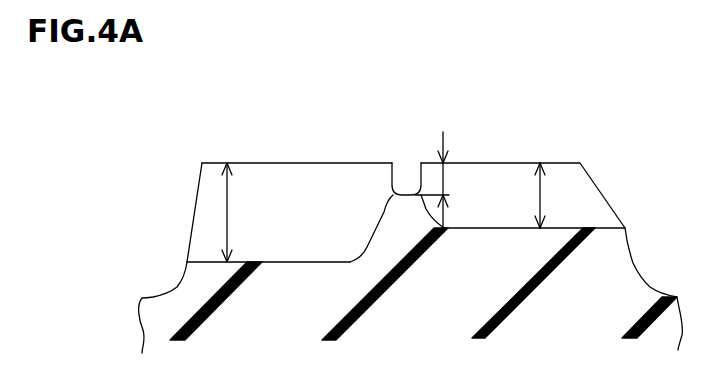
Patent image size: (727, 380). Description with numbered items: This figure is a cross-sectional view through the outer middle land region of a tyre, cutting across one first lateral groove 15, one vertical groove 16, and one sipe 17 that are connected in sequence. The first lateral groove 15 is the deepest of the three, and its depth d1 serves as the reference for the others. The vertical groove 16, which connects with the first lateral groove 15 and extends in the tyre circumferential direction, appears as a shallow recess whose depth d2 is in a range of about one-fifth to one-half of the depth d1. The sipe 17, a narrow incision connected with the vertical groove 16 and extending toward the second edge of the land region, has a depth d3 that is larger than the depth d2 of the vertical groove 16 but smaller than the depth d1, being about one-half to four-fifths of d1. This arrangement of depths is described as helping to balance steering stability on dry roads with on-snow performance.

The first lateral groove 15 is at (308, 212).
The vertical groove 16 is at (407, 186).
The sipe 17 is at (500, 192).
The depth of first lateral groove d1 is at (230, 210).
The depth of vertical groove d2 is at (445, 177).
The depth of sipe d3 is at (542, 195).